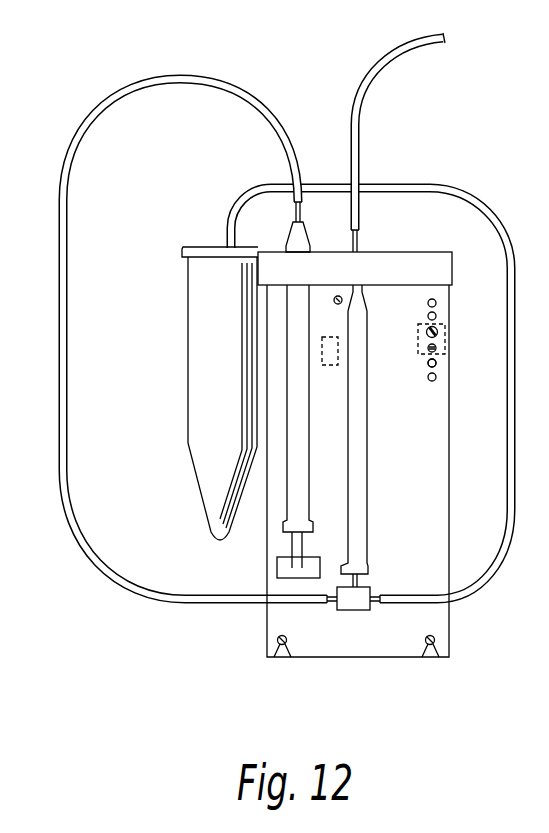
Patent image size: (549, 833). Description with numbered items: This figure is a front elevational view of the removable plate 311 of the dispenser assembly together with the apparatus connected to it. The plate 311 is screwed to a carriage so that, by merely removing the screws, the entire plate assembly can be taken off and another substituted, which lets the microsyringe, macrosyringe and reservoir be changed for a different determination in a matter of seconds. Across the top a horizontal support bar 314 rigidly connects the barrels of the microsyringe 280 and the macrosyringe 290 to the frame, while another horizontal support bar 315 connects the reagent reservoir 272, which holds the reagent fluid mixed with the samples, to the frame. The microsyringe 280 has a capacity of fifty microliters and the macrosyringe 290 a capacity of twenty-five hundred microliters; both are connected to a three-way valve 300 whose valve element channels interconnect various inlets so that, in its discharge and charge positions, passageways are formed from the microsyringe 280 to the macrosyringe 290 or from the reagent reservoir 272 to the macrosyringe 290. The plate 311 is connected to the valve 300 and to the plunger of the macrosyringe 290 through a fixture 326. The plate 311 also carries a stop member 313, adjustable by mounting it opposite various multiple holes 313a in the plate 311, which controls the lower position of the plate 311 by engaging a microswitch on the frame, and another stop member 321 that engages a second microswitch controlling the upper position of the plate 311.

The reagent reservoir 272 is at (188, 318).
The microsyringe 280 is at (365, 475).
The macrosyringe 290 is at (288, 512).
The 3-way valve 300 is at (366, 614).
The removable plate 311 is at (352, 657).
The stop member 313 is at (446, 343).
The multiple holes 313a is at (440, 366).
The horizontal support bar 314 is at (452, 227).
The horizontal support bar 315 is at (208, 247).
The stop member 321 is at (325, 366).
The fixture 326 is at (307, 558).